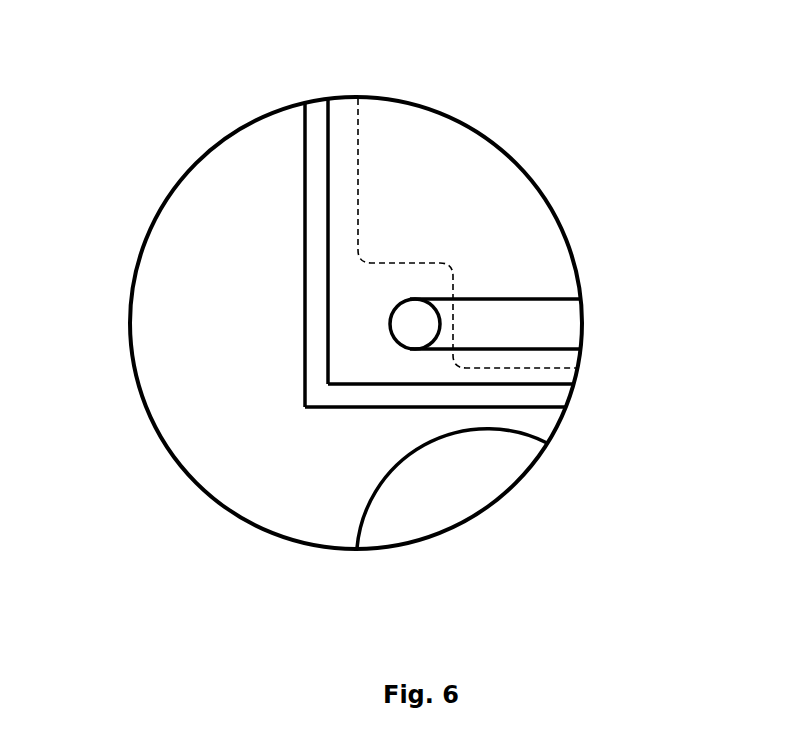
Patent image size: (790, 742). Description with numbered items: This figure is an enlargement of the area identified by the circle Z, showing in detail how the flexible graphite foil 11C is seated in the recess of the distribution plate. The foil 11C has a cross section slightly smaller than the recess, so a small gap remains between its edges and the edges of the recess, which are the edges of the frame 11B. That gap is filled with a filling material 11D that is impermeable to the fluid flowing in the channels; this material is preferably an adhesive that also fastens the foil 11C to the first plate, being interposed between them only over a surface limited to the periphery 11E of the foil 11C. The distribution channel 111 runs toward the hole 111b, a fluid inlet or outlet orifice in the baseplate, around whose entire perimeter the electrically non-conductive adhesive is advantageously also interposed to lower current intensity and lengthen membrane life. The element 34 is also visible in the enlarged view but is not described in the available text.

The circle Z is at (190, 482).
The frame 11B is at (232, 205).
The flexible graphite foil 11C is at (417, 138).
The filling material 11D is at (314, 125).
The periphery 11E is at (568, 378).
The distribution channel 111 is at (517, 318).
The hole 111b is at (416, 323).
The curved member 34 is at (471, 470).